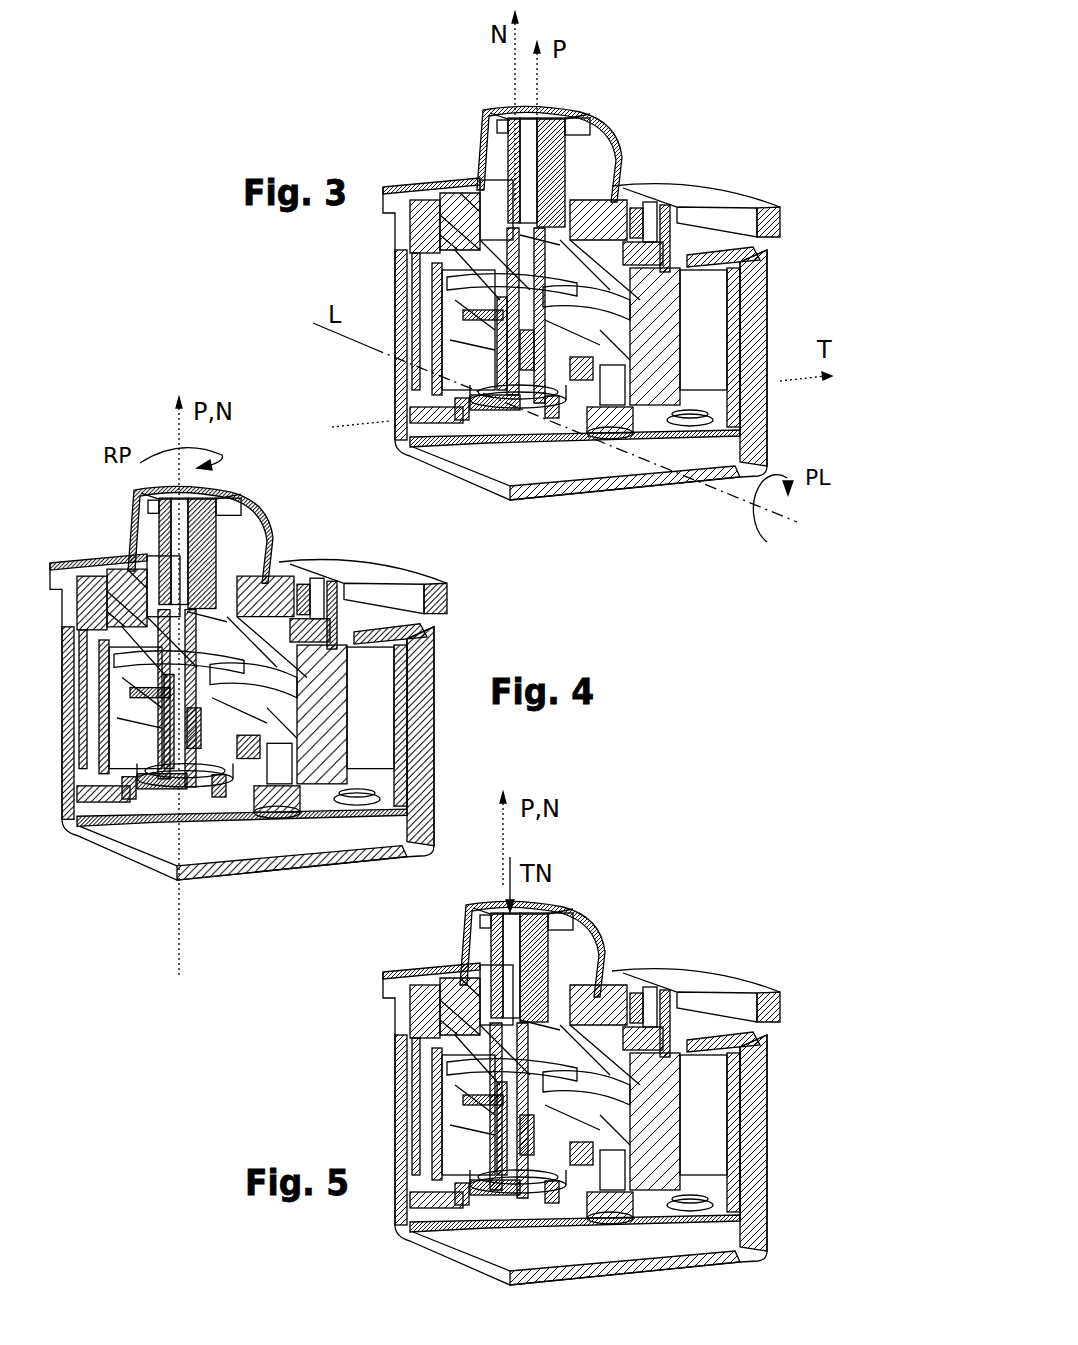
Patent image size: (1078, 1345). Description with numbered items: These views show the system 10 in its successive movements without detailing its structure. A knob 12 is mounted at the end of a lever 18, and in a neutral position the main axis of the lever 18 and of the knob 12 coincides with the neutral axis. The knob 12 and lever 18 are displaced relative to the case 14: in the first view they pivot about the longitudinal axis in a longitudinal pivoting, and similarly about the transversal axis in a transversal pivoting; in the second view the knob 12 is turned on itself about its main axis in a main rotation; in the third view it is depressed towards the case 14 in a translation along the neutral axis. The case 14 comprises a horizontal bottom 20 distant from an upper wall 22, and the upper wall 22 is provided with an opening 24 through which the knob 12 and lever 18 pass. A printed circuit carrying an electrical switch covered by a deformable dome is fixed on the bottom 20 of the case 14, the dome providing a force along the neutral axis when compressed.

In FIG. 3, the system 10 is at (590, 310).
In FIG. 3, the knob 12 is at (622, 134).
In FIG. 4, the knob 12 is at (268, 531).
In FIG. 5, the knob 12 is at (594, 943).
In FIG. 3, the case 14 is at (767, 308).
In FIG. 4, the case 14 is at (427, 678).
In FIG. 5, the case 14 is at (757, 1088).
In FIG. 3, the lever 18 is at (423, 227).
In FIG. 4, the lever 18 is at (83, 640).
In FIG. 5, the lever 18 is at (520, 1033).
In FIG. 3, the bottom 20 is at (573, 470).
In FIG. 4, the bottom 20 is at (140, 830).
In FIG. 5, the bottom 20 is at (480, 1240).
In FIG. 3, the upper wall 22 is at (613, 207).
In FIG. 4, the upper wall 22 is at (263, 593).
In FIG. 5, the upper wall 22 is at (597, 1003).
In FIG. 3, the opening 24 is at (493, 200).
In FIG. 4, the opening 24 is at (140, 557).
In FIG. 5, the opening 24 is at (483, 980).